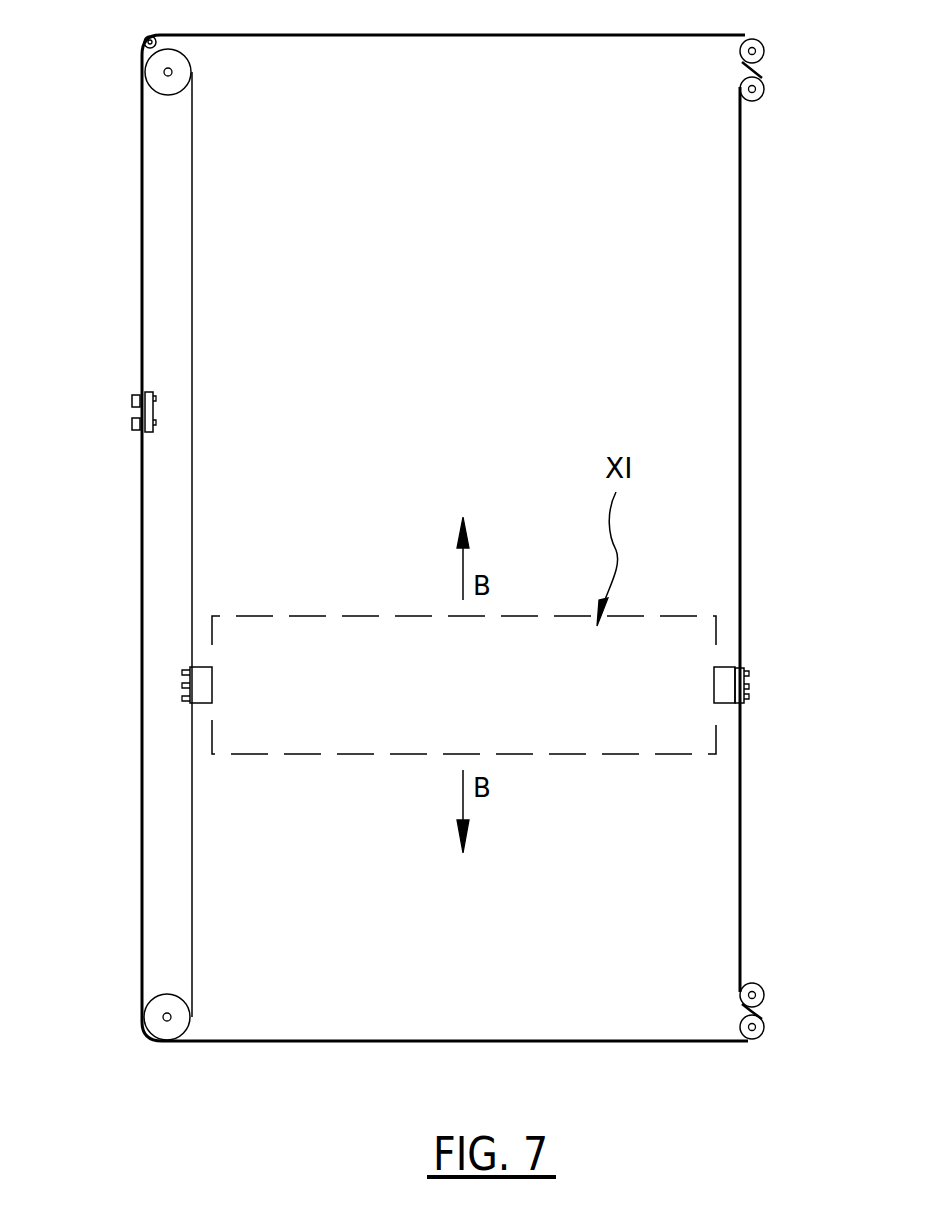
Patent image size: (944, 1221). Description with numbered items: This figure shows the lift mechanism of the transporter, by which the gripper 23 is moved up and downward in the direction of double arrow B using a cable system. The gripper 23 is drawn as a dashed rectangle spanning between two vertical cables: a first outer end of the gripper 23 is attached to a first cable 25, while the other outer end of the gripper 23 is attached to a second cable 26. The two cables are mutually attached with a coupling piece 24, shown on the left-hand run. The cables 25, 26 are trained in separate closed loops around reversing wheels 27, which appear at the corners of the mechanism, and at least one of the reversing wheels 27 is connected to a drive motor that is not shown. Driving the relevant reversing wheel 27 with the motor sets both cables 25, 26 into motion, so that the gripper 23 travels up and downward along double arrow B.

The gripper 23 is at (270, 731).
The coupling piece 24 is at (133, 421).
The first cable 25 is at (192, 449).
The second cable 26 is at (742, 536).
The reversing wheels 27 is at (175, 68).